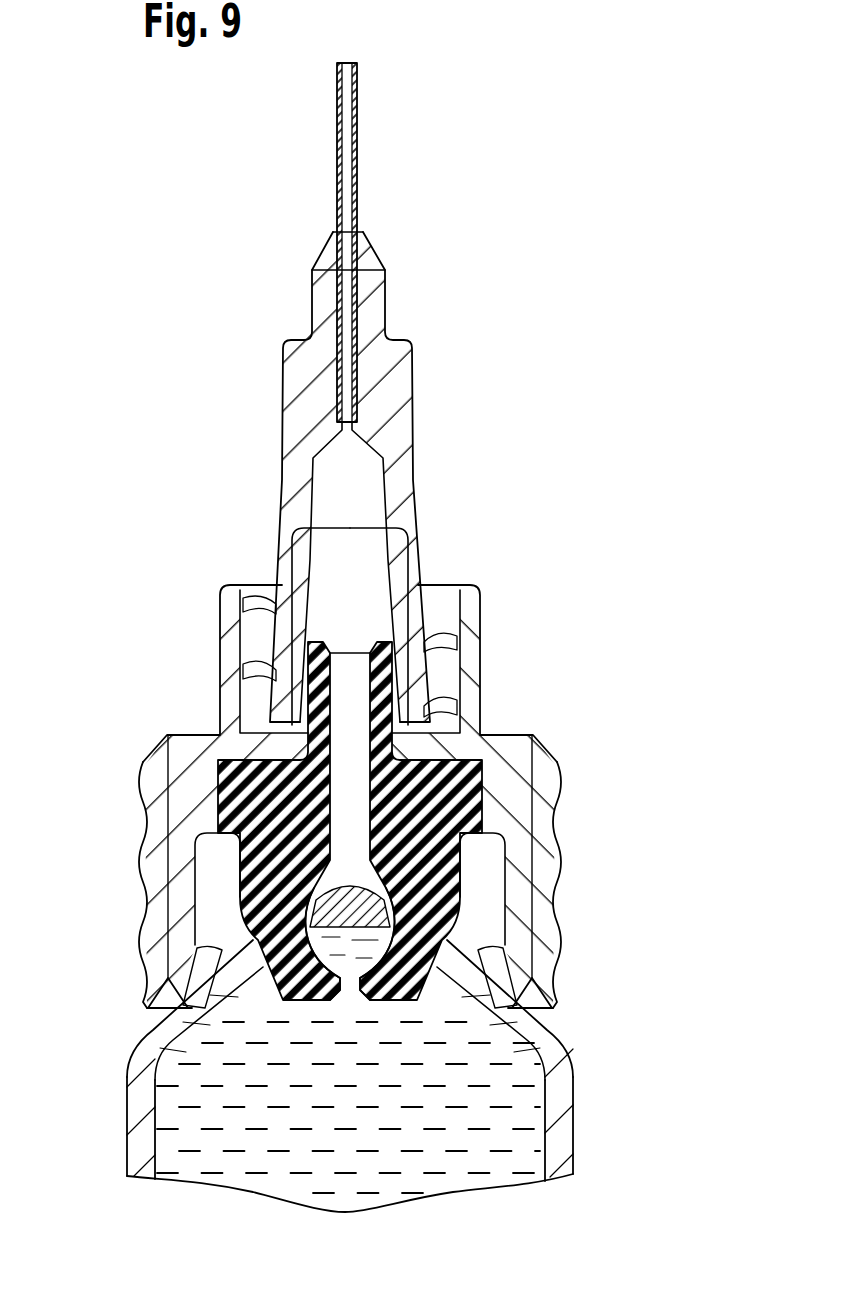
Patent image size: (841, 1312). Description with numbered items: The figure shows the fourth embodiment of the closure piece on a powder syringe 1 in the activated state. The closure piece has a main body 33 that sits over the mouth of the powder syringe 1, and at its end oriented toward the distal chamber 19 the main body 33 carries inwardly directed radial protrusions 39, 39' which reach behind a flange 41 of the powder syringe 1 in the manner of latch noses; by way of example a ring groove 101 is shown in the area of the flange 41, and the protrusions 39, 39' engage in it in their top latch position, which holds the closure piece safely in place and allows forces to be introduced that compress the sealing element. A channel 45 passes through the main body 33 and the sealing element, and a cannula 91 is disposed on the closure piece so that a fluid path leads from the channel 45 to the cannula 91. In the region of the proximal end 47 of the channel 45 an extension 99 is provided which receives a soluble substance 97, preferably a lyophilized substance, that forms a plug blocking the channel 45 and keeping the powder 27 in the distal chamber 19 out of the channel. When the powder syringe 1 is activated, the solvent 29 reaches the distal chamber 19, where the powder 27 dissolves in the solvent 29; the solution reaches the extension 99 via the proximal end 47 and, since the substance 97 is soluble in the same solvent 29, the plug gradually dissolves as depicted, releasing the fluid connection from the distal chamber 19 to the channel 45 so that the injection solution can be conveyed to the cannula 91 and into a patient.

The powder syringe 1 is at (667, 1095).
The cannula 91 is at (430, 242).
The main body 33 is at (192, 762).
The ring groove 101 is at (173, 885).
The flange 41 is at (217, 857).
The channel 45 is at (337, 680).
The soluble substance 97 is at (380, 898).
The extension 99 is at (385, 957).
The proximal end 47 is at (352, 988).
The radial protrusion 39' is at (155, 1010).
The radial protrusion 39 is at (545, 1010).
The solvent 29 is at (500, 1142).
The powder 27 is at (350, 1193).
The distal chamber 19 is at (200, 1120).